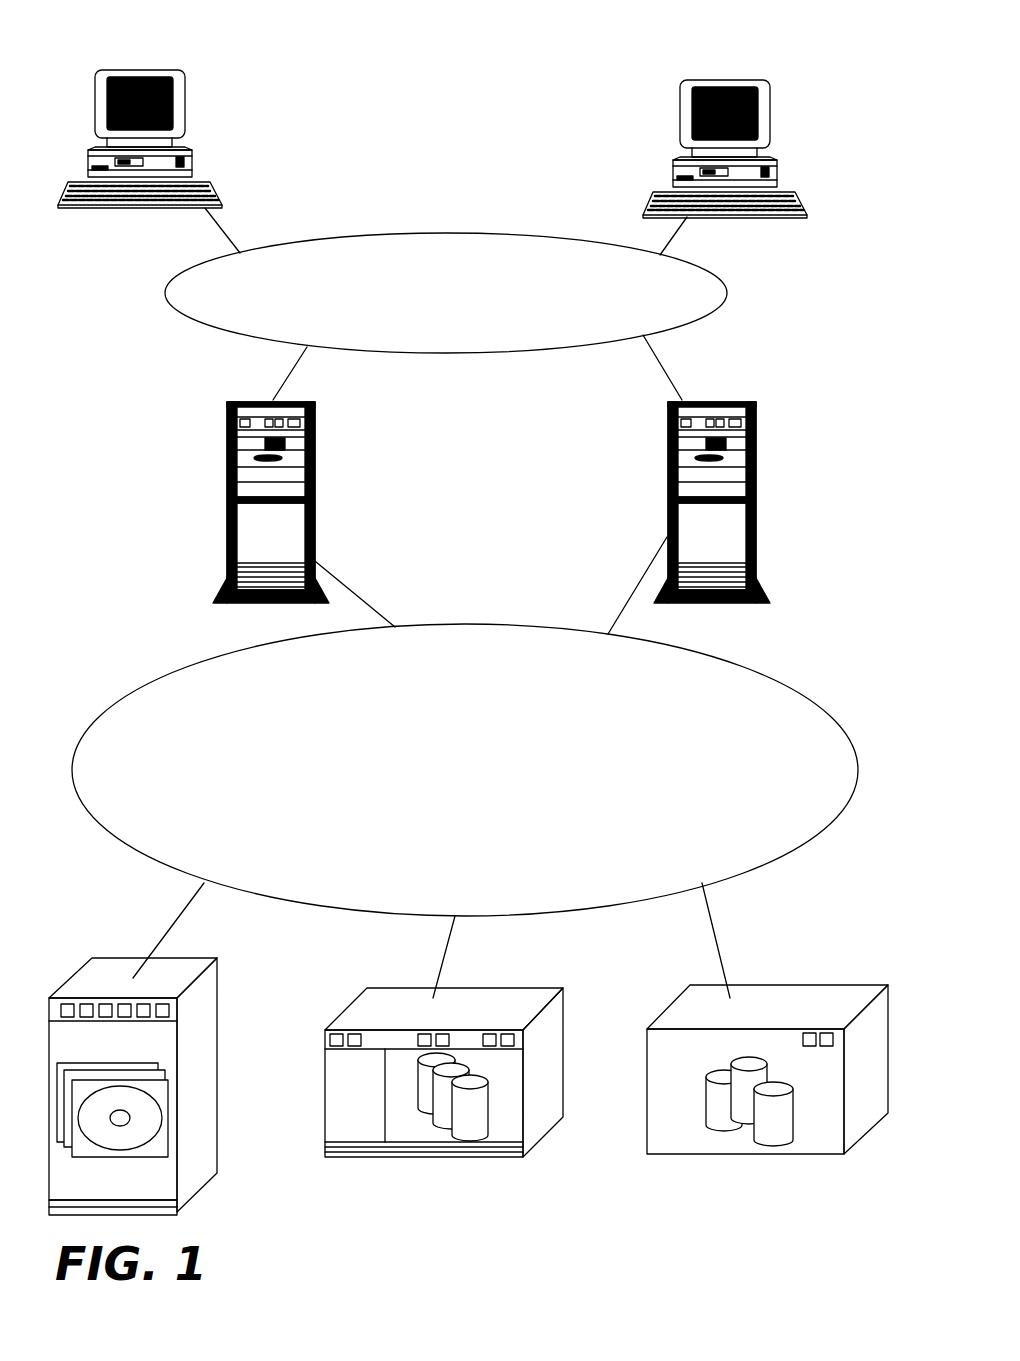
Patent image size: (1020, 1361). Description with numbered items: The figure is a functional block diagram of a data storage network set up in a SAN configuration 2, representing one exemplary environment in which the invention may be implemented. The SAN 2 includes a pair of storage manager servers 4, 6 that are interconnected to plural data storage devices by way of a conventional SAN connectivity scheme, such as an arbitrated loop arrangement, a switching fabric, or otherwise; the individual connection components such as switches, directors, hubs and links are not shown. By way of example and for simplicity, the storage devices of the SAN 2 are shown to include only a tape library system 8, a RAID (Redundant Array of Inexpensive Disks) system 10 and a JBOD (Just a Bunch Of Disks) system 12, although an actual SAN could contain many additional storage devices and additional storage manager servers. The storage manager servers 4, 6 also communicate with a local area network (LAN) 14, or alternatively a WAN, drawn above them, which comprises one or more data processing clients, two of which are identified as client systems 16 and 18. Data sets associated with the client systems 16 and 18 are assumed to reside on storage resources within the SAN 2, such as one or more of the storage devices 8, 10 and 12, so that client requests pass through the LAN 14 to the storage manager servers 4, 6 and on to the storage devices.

The SAN configuration 2 is at (165, 674).
The storage manager server 4 is at (313, 460).
The storage manager server 6 is at (755, 458).
The tape library system 8 is at (217, 1037).
The RAID system 10 is at (563, 1037).
The JBOD system 12 is at (810, 995).
The local area network 14 is at (467, 233).
The client system 16 is at (163, 68).
The client system 18 is at (737, 82).